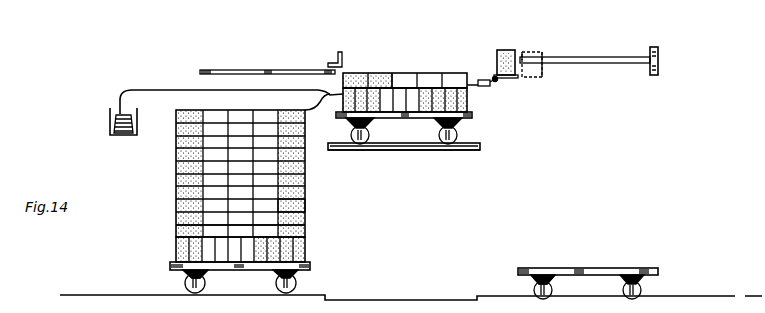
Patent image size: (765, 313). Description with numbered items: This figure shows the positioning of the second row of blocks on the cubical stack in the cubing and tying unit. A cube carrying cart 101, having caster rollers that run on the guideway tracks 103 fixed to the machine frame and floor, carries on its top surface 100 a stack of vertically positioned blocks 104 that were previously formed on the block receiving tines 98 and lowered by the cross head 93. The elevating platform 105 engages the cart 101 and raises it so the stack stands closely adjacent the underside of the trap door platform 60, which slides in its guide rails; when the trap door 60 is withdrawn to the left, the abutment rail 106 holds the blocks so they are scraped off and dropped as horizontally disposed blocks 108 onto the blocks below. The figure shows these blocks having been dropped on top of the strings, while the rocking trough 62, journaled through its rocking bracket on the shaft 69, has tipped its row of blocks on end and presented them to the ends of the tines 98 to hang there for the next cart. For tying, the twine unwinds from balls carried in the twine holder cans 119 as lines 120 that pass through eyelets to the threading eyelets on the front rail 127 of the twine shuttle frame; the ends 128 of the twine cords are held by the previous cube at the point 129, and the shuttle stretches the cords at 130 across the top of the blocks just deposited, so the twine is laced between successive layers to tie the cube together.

The trap door platform 60 is at (266, 70).
The rocking trough 62 is at (497, 61).
The shaft 69 is at (495, 79).
The cross head 93 is at (658, 65).
The block receiving tines 98 is at (597, 57).
The top surface 100 is at (310, 268).
The cube carrying cart 101 is at (176, 277).
The guideway tracks 103 is at (688, 296).
The stack of vertically positioned blocks 104 is at (305, 249).
The elevating platform 105 is at (412, 150).
The abutment rail 106 is at (342, 52).
The horizontally disposed blocks 108 is at (305, 200).
The twine holder cans 119 is at (110, 117).
The lines 120 is at (312, 90).
The front rail 127 is at (488, 90).
The ends of the twine cords 128 is at (176, 240).
The point 129 is at (176, 236).
The stretched cords 130 is at (392, 78).